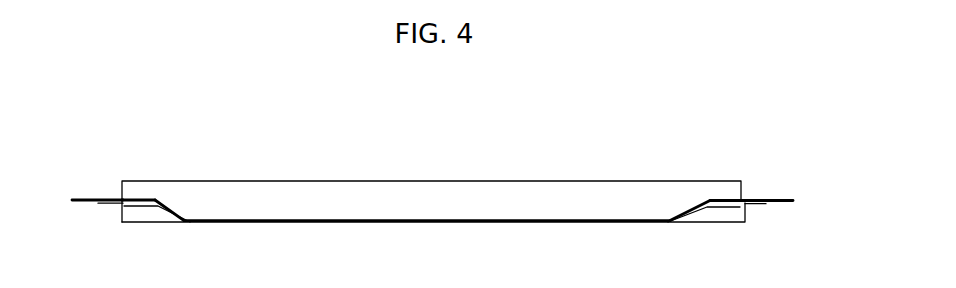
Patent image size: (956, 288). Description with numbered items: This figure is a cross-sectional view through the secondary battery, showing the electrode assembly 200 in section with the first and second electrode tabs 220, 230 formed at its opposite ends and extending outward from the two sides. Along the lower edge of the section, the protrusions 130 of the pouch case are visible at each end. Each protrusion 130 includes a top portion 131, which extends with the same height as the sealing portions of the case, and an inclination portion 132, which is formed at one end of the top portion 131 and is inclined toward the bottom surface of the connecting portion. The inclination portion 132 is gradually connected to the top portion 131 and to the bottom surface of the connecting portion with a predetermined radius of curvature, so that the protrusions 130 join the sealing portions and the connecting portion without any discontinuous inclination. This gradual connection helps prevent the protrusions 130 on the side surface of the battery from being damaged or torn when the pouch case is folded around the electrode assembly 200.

The protrusion 130 is at (433, 158).
The top portion 131 is at (720, 200).
The inclination portion 132 is at (688, 204).
The electrode assembly 200 is at (432, 181).
The first electrode tab 220 is at (84, 197).
The second electrode tab 230 is at (773, 185).